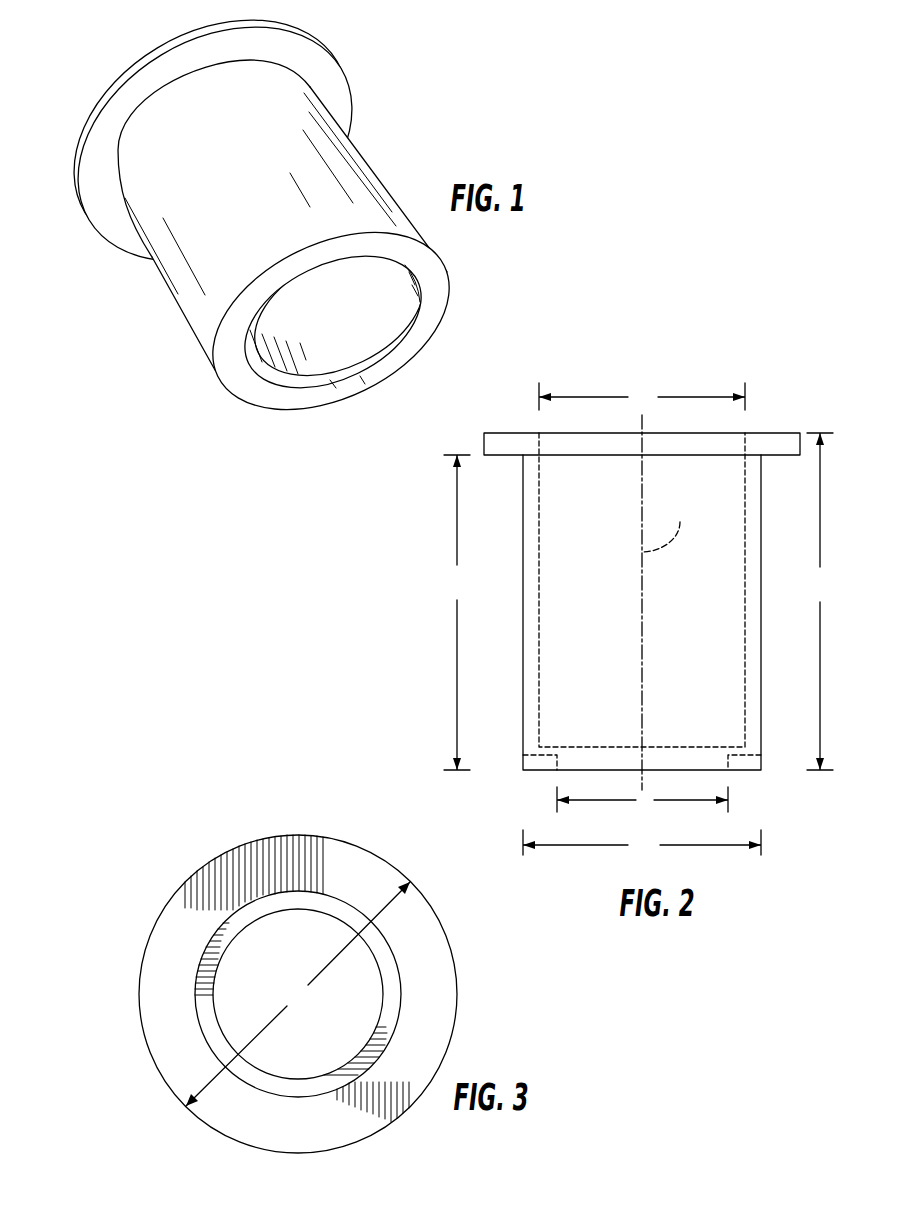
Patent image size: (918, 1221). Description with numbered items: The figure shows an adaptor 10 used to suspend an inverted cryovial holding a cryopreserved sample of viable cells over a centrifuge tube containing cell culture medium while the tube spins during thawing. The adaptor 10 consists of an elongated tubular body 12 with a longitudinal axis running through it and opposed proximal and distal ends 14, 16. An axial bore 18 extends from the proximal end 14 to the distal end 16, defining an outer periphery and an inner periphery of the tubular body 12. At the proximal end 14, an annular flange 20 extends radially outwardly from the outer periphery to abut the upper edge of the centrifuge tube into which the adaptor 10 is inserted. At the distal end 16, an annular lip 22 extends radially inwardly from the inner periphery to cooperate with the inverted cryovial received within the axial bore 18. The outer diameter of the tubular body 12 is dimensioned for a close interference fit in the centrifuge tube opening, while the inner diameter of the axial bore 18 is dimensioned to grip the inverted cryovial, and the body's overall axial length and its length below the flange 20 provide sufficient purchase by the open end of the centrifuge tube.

In FIG. 1, the adaptor 10 is at (274, 239).
In FIG. 2, the adaptor 10 is at (638, 586).
In FIG. 3, the adaptor 10 is at (329, 948).
In FIG. 1, the tubular body 12 is at (253, 218).
In FIG. 2, the tubular body 12 is at (639, 636).
In FIG. 1, the proximal end 14 is at (128, 146).
In FIG. 2, the proximal end 14 is at (525, 480).
In FIG. 1, the distal end 16 is at (202, 352).
In FIG. 2, the distal end 16 is at (758, 757).
In FIG. 1, the axial bore 18 is at (340, 330).
In FIG. 2, the axial bore 18 is at (539, 648).
In FIG. 3, the axial bore 18 is at (395, 1027).
In FIG. 1, the annular flange 20 is at (330, 72).
In FIG. 2, the annular flange 20 is at (497, 438).
In FIG. 3, the annular flange 20 is at (425, 948).
In FIG. 1, the annular lip 22 is at (312, 383).
In FIG. 2, the annular lip 22 is at (520, 755).
In FIG. 3, the annular lip 22 is at (338, 907).